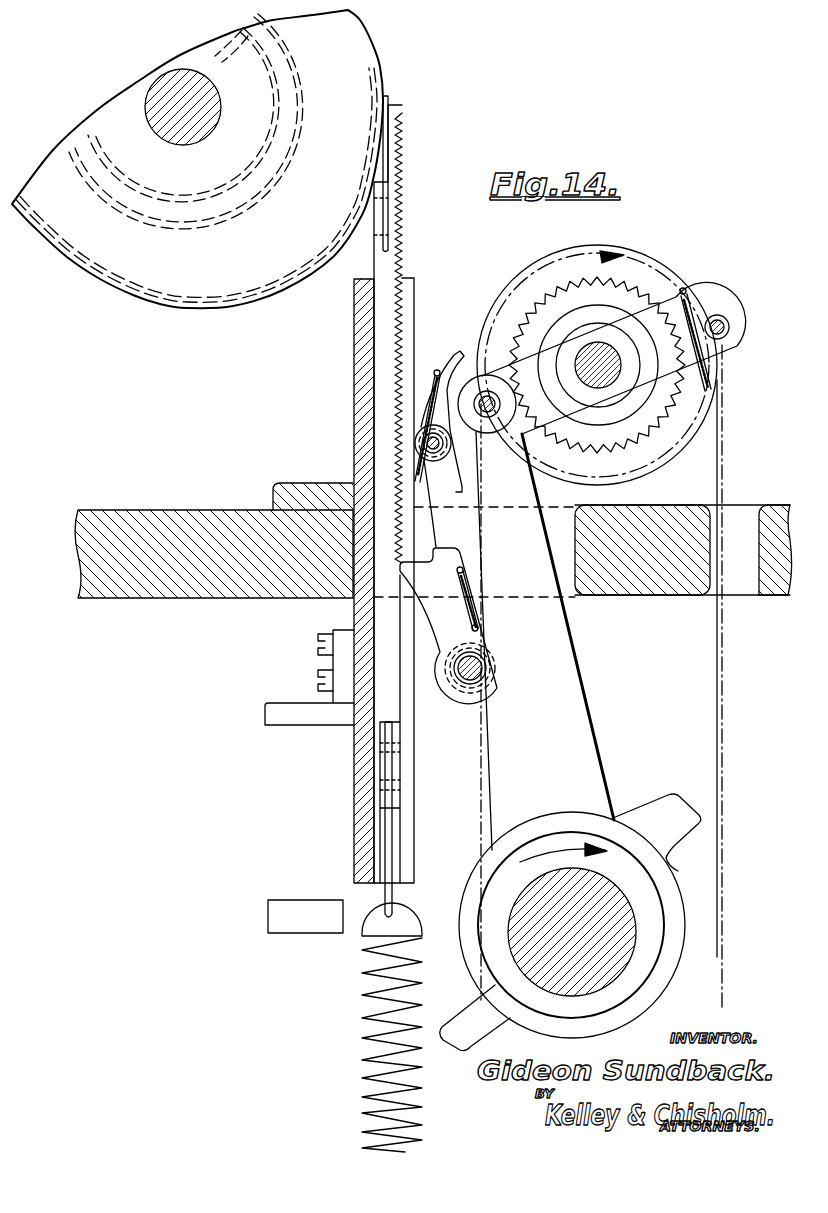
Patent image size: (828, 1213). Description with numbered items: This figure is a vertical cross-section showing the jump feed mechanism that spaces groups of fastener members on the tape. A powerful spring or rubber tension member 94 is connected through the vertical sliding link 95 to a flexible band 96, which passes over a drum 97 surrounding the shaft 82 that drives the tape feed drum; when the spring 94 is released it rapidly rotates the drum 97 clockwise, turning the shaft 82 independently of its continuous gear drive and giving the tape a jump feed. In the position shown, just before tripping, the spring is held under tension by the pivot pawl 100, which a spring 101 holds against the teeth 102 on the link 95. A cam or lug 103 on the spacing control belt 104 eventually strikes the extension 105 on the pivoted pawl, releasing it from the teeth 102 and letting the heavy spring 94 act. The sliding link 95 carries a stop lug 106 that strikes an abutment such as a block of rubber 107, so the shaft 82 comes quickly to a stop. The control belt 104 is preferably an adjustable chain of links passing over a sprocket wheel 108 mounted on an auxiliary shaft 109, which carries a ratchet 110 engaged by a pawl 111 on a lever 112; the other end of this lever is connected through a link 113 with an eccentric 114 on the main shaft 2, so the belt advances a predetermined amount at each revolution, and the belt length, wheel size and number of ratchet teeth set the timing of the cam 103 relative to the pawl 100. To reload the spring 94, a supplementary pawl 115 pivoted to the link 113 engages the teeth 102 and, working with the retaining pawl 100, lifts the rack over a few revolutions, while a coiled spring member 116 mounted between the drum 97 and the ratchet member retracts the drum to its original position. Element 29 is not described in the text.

The main shaft 2 is at (600, 958).
The frame 29 is at (172, 585).
The shaft 82 is at (165, 95).
The spring 94 is at (362, 1049).
The sliding link 95 is at (388, 272).
The flexible band 96 is at (385, 97).
The drum 97 is at (345, 57).
The pivot pawl 100 is at (423, 513).
The spring 101 is at (437, 372).
The teeth 102 is at (414, 447).
The cam 103 is at (462, 483).
The spacing control belt 104 is at (728, 685).
The extension 105 is at (458, 350).
The stop lug 106 is at (268, 715).
The block of rubber 107 is at (268, 915).
The sprocket wheel 108 is at (650, 275).
The auxiliary shaft 109 is at (605, 358).
The ratchet 110 is at (648, 420).
The pawl 111 is at (693, 388).
The lever 112 is at (740, 328).
The link 113 is at (580, 715).
The eccentric 114 is at (655, 915).
The supplementary pawl 115 is at (452, 690).
The coiled spring member 116 is at (268, 190).